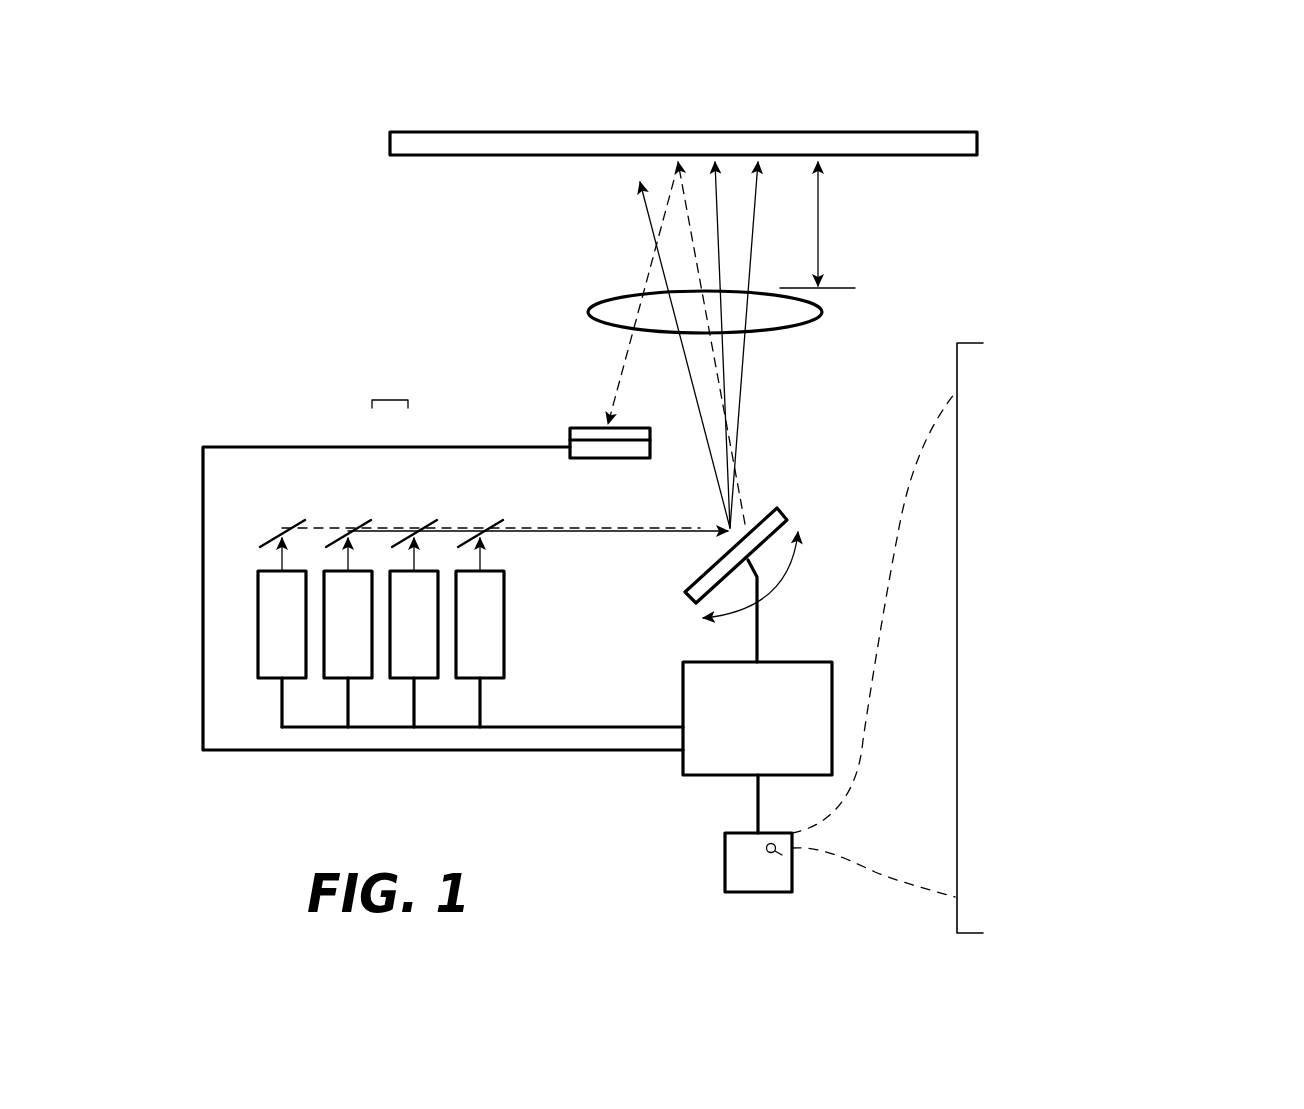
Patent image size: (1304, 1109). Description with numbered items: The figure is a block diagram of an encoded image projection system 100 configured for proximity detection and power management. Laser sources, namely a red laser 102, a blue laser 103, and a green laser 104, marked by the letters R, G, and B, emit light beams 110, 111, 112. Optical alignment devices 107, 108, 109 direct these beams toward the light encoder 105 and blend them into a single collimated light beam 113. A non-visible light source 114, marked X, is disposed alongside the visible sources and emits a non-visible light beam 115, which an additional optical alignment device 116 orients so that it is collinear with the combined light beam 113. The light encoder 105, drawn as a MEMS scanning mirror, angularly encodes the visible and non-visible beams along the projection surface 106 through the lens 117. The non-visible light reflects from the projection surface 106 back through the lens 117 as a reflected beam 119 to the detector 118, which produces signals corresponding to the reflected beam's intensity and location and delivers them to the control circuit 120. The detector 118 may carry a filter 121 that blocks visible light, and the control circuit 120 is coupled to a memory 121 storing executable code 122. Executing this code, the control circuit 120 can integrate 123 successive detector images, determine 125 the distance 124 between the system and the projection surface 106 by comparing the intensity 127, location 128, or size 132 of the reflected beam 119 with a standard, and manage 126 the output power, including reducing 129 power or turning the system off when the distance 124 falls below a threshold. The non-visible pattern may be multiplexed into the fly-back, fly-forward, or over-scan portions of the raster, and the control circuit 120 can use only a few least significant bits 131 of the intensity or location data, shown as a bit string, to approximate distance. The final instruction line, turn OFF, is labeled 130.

The encoded image projection system 100 is at (268, 351).
The red laser 102 is at (337, 680).
The blue laser 103 is at (401, 680).
The green laser 104 is at (467, 680).
The light encoder 105 is at (684, 594).
The projection surface 106 is at (488, 156).
The optical alignment device 107 is at (367, 518).
The optical alignment device 108 is at (433, 518).
The optical alignment device 109 is at (499, 518).
The light beam 110 is at (346, 557).
The light beam 111 is at (412, 557).
The light beam 112 is at (478, 557).
The collimated light beam 113 is at (546, 535).
The non-visible light source 114 is at (263, 680).
The non-visible light beam 115 is at (282, 567).
The additional optical alignment device 116 is at (301, 518).
The lens 117 is at (772, 333).
The detector 118 is at (636, 450).
The reflected beam 119 is at (622, 372).
The control circuit 120 is at (680, 764).
The memory 121 is at (570, 433).
The executable code 122 is at (971, 343).
The integrate 123 is at (1186, 654).
The distance 124 is at (820, 205).
The determine 125 is at (980, 700).
The manage output power 126 is at (975, 844).
The intensity 127 is at (1000, 749).
The location 128 is at (998, 767).
The reduce 129 is at (1135, 860).
The turn off instruction 130 is at (1152, 895).
The least significant bits 131 is at (391, 398).
The size 132 is at (1050, 797).